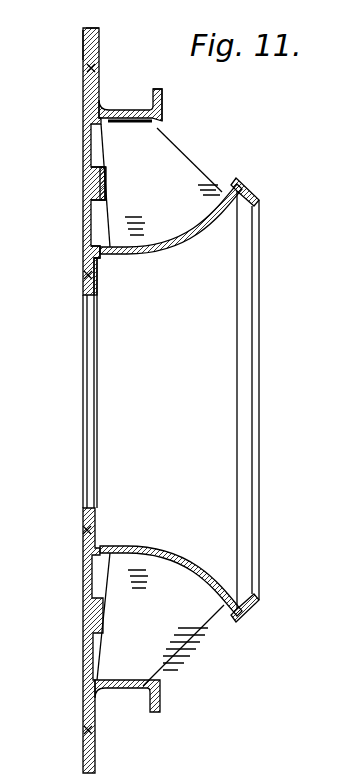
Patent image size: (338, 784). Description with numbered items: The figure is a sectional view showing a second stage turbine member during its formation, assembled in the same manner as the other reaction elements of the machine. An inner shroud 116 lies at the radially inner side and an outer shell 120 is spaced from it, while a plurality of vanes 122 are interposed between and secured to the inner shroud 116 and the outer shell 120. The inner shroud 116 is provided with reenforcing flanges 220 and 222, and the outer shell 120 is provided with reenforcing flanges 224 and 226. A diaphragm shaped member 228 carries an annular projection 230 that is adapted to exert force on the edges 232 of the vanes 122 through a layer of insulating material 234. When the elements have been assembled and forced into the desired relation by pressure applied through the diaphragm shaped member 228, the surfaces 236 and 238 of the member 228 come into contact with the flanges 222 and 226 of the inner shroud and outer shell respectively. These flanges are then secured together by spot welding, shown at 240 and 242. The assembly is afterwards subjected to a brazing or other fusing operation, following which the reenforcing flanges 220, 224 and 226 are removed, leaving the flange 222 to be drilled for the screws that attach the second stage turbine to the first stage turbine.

The inner shroud 116 is at (140, 96).
The outer shell 120 is at (172, 238).
The vanes 122 is at (194, 163).
The reenforcing flange 220 is at (163, 98).
The reenforcing flange 222 is at (100, 48).
The reenforcing flange 224 is at (246, 192).
The reenforcing flange 226 is at (98, 288).
The diaphragm shaped member 228 is at (85, 148).
The annular projection 230 is at (90, 194).
The edges of the vanes 232 is at (106, 153).
The insulating material 234 is at (104, 184).
The surface of the member 236 is at (83, 43).
The surface of the member 238 is at (84, 262).
The spot welding 240 is at (88, 69).
The spot welding 242 is at (87, 276).